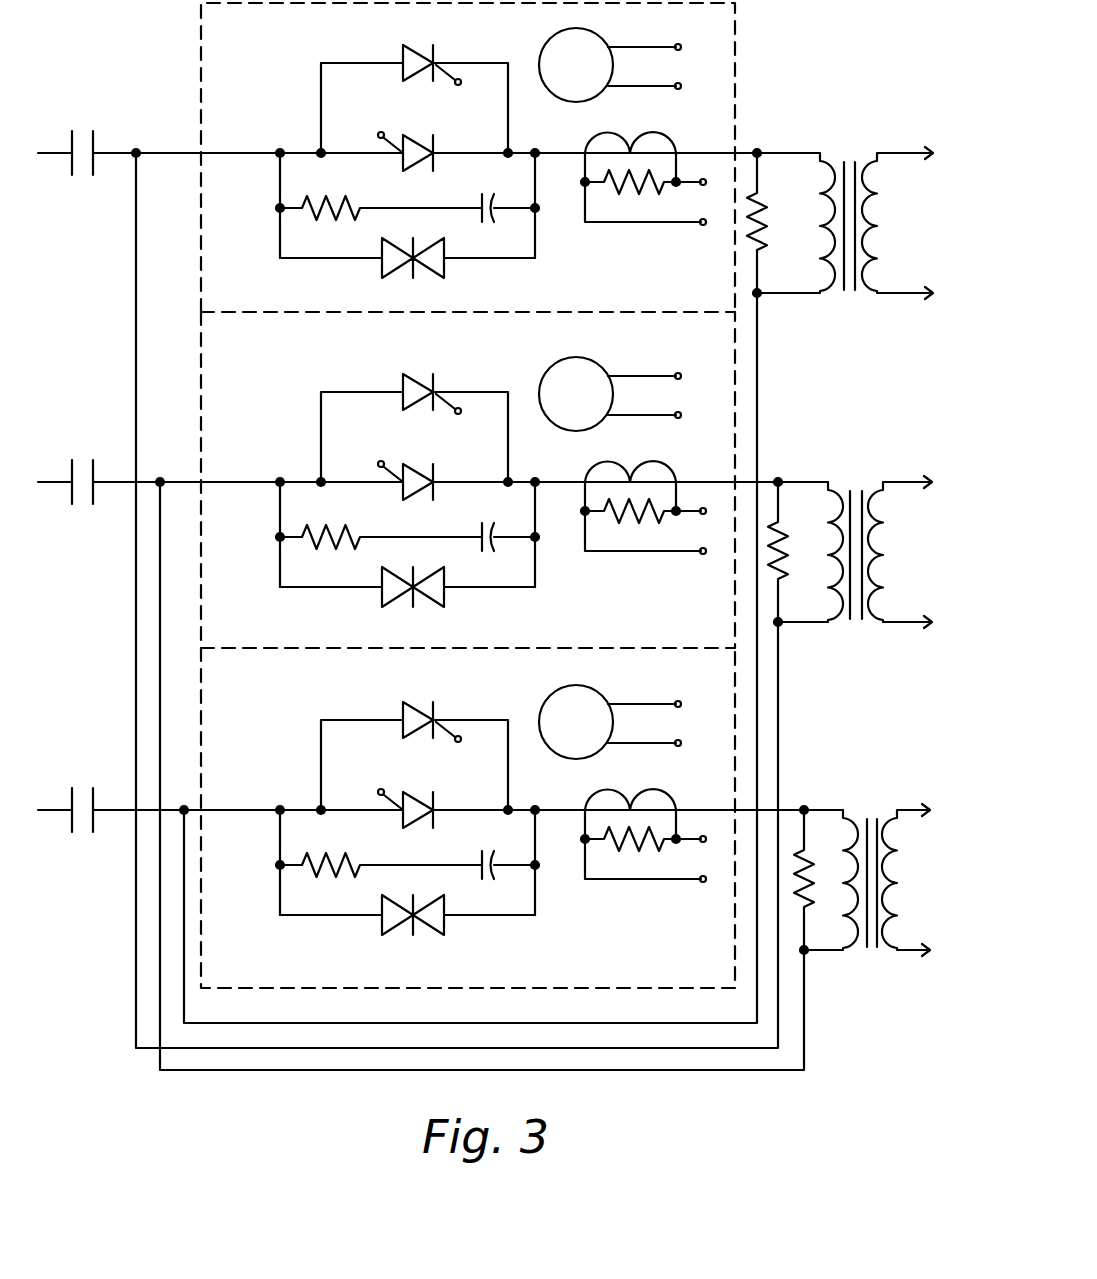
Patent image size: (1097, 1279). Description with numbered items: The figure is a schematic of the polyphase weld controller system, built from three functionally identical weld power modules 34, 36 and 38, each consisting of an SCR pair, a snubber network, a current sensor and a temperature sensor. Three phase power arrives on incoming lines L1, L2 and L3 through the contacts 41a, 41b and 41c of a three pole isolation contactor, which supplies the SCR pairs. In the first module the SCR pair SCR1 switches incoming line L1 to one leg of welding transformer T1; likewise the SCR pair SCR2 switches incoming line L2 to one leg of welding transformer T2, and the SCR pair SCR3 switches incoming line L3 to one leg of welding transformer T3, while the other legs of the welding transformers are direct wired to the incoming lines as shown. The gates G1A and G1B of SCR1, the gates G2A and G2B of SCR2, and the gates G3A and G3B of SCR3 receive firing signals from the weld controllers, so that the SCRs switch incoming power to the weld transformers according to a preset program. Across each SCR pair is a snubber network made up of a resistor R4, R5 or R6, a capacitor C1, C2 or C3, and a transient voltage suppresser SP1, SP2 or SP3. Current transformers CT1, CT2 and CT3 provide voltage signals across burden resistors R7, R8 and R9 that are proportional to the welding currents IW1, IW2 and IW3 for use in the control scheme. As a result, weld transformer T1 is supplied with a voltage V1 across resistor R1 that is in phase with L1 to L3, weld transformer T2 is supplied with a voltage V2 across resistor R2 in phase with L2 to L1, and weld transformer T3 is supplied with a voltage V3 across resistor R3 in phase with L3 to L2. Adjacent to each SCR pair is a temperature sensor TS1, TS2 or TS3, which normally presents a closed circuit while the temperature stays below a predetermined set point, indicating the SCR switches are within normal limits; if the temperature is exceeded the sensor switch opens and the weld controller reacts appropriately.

The weld power module 34 is at (217, 70).
The weld power module 36 is at (218, 397).
The weld power module 38 is at (225, 722).
The contact 41a is at (115, 126).
The contact 41b is at (67, 445).
The contact 41c is at (67, 776).
The incoming line L1 is at (55, 140).
The incoming line L2 is at (55, 469).
The incoming line L3 is at (55, 797).
The SCR pair SCR1 is at (414, 108).
The SCR pair SCR2 is at (414, 437).
The SCR pair SCR3 is at (414, 765).
The SCR1 gate G1A is at (365, 132).
The SCR1 gate G1B is at (471, 86).
The SCR2 gate G2A is at (365, 461).
The SCR2 gate G2B is at (471, 415).
The SCR3 gate G3A is at (365, 789).
The SCR3 gate G3B is at (471, 743).
The snubber resistor R4 is at (380, 205).
The snubber resistor R5 is at (380, 534).
The snubber resistor R6 is at (380, 862).
The snubber capacitor C1 is at (506, 205).
The snubber capacitor C2 is at (506, 534).
The snubber capacitor C3 is at (506, 862).
The transient voltage suppresser SP1 is at (407, 247).
The transient voltage suppresser SP2 is at (407, 576).
The transient voltage suppresser SP3 is at (407, 904).
The temperature sensor TS1 is at (610, 65).
The temperature sensor TS2 is at (610, 394).
The temperature sensor TS3 is at (610, 722).
The current transformer CT1 is at (643, 165).
The current transformer CT2 is at (643, 494).
The current transformer CT3 is at (643, 822).
The burden resistor R7 is at (630, 195).
The burden resistor R8 is at (630, 524).
The burden resistor R9 is at (630, 852).
The welding current IW1 is at (711, 202).
The welding current IW2 is at (711, 531).
The welding current IW3 is at (711, 859).
The voltage V1 is at (774, 137).
The voltage V2 is at (796, 466).
The voltage V3 is at (802, 794).
The resistor R1 is at (775, 223).
The resistor R2 is at (795, 552).
The resistor R3 is at (819, 880).
The welding transformer T1 is at (845, 229).
The welding transformer T2 is at (855, 559).
The welding transformer T3 is at (867, 886).